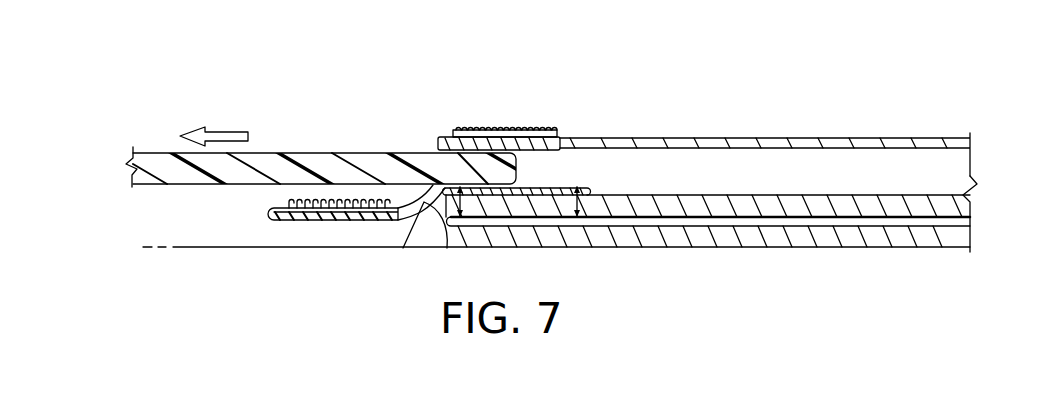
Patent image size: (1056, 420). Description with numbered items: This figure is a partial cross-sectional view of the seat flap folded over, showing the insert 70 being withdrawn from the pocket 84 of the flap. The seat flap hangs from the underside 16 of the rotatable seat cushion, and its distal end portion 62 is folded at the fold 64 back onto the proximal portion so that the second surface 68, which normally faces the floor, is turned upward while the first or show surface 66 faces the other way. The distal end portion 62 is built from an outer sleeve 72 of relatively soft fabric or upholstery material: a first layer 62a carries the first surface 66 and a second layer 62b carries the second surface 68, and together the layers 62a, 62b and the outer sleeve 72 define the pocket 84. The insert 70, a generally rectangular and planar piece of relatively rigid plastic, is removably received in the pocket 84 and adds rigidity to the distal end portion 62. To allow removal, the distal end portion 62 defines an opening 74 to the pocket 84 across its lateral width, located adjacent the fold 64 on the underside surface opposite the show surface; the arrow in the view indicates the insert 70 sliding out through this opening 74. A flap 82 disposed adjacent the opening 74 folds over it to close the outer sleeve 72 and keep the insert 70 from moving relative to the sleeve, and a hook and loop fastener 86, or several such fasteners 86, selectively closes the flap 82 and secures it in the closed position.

The underside 16 is at (212, 247).
The distal end portion 62 is at (787, 218).
The first layer 62a is at (834, 210).
The second layer 62b is at (905, 138).
The fold 64 is at (409, 242).
The first surface 66 is at (690, 218).
The second surface 68 is at (680, 138).
The insert 70 is at (292, 152).
The outer sleeve 72 is at (801, 150).
The opening 74 is at (465, 128).
The flap 82 is at (327, 221).
The pocket 84 is at (697, 167).
The hook and loop fastener 86 is at (340, 200).